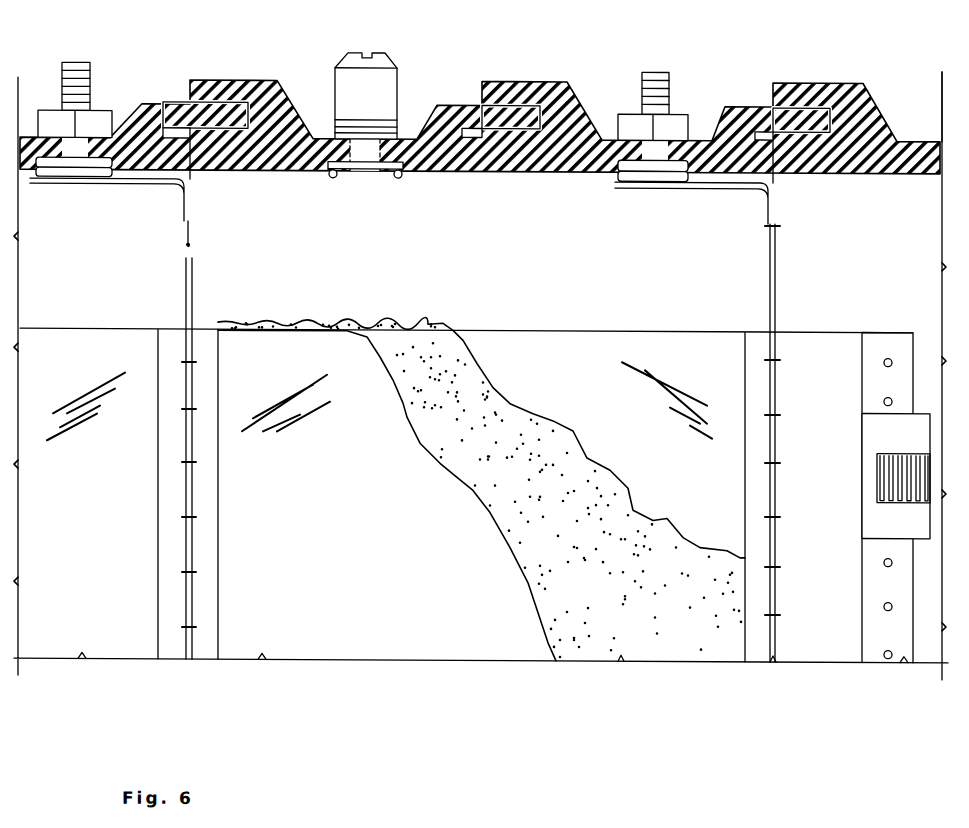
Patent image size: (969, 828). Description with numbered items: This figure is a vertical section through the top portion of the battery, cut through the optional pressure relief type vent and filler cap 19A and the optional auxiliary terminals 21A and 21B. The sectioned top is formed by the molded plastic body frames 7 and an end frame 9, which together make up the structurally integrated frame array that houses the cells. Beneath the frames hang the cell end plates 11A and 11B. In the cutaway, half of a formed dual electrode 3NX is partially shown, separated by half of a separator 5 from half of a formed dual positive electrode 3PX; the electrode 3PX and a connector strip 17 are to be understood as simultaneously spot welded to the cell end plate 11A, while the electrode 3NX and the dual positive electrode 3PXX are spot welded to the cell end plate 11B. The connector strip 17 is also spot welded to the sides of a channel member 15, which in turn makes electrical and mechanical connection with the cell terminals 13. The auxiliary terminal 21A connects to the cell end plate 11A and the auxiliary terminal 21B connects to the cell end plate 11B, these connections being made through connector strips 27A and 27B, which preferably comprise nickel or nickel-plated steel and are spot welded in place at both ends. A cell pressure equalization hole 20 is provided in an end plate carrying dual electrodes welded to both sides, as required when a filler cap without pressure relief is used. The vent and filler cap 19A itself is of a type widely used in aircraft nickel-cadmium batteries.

The body frame 7 is at (147, 88).
The end frame 9 is at (925, 93).
The auxiliary terminal 21B is at (78, 62).
The pressure relief type vent and filler cap 19A is at (371, 95).
The auxiliary terminal 21A is at (647, 70).
The connector strip 27B is at (163, 186).
The connector strip 27A is at (747, 186).
The cell pressure equalization hole 20 is at (182, 252).
The cell end plate 11B is at (195, 279).
The cell end plate 11A is at (777, 291).
The formed dual positive electrode 3PXX is at (92, 349).
The formed dual electrode 3NX is at (263, 352).
The separator 5 is at (410, 331).
The formed dual positive electrode 3PX is at (597, 350).
The connector strip 17 is at (802, 328).
The channel member 15 is at (860, 369).
The cell terminal 13 is at (887, 428).